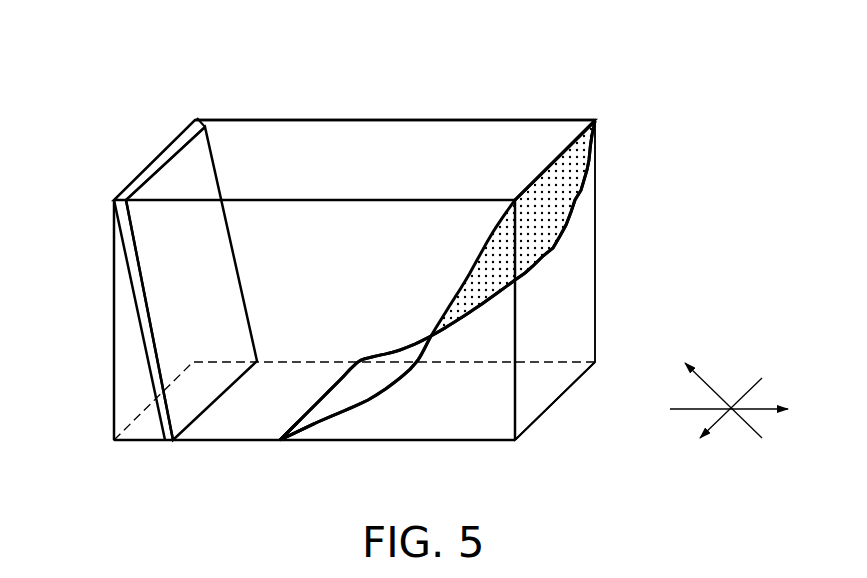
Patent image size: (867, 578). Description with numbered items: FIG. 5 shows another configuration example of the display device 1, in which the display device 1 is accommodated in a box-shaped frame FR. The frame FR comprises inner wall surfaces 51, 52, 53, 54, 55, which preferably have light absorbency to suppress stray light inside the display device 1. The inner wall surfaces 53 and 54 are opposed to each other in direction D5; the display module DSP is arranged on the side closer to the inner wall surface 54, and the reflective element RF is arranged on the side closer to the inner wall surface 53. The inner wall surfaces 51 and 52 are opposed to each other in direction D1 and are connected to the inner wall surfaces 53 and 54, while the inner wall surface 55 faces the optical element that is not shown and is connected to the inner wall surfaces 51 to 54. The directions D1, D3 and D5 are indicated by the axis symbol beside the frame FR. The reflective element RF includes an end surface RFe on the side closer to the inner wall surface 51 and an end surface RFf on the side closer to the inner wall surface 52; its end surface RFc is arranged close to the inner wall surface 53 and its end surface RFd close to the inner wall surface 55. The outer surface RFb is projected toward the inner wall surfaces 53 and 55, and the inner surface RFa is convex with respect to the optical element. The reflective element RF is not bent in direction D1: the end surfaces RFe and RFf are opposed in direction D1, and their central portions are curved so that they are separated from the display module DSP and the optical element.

The display device 1 is at (529, 99).
The inner wall surface 51 is at (257, 186).
The inner wall surface 52 is at (449, 114).
The inner wall surface 53 is at (566, 312).
The inner wall surface 54 is at (137, 334).
The inner wall surface 55 is at (442, 408).
The display module DSP is at (139, 369).
The frame FR is at (541, 390).
The reflective element RF is at (553, 182).
The inner surface RFa is at (368, 374).
The outer surface RFb is at (533, 236).
The end surface RFc is at (560, 147).
The end surface RFd is at (294, 418).
The end surface RFe is at (368, 406).
The end surface RFf is at (387, 347).
The direction D1 is at (717, 424).
The direction D3 is at (723, 389).
The direction D5 is at (746, 410).